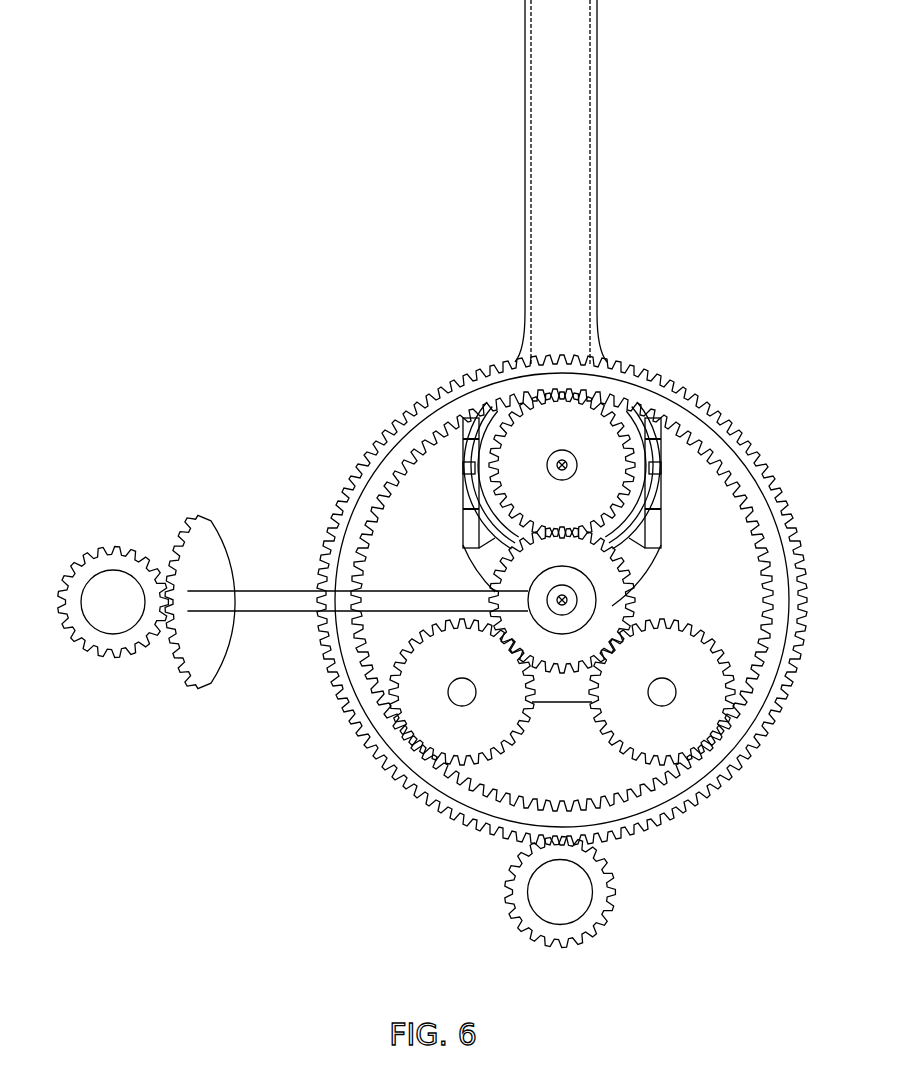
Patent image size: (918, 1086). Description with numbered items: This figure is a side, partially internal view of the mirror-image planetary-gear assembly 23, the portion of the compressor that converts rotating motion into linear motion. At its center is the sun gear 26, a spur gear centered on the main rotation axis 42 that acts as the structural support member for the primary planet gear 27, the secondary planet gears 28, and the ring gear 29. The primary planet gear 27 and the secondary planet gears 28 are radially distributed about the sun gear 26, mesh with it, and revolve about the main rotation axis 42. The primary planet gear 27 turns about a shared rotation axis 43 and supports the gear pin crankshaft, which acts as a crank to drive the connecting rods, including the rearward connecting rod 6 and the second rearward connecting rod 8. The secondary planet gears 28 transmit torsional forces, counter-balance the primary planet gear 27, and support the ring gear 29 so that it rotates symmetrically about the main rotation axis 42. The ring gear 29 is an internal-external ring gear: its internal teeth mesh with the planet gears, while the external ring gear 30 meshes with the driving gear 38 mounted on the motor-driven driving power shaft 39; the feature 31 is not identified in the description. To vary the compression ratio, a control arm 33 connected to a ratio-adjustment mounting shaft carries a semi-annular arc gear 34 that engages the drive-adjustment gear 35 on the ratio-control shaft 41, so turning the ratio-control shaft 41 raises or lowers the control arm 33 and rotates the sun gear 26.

The rearward connecting rod 6 is at (596, 222).
The second rearward connecting rod 8 is at (598, 182).
The mirror-image planetary-gear assembly 23 is at (541, 553).
The sun gear 26 is at (549, 565).
The primary planet gear 27 is at (549, 512).
The plurality of secondary planet gears 28 is at (447, 740).
The ring gear 29 is at (786, 549).
The external ring gear 30 is at (745, 442).
The internal toothing of ring gear 31 is at (695, 458).
The control arm 33 is at (268, 612).
The arc gear 34 is at (183, 558).
The drive-adjustment gear 35 is at (66, 612).
The driving gear 38 is at (510, 902).
The driving power shaft 39 is at (545, 904).
The ratio-control shaft 41 is at (100, 614).
The main rotation axis 42 is at (562, 612).
The shared rotation axis 43 is at (568, 466).